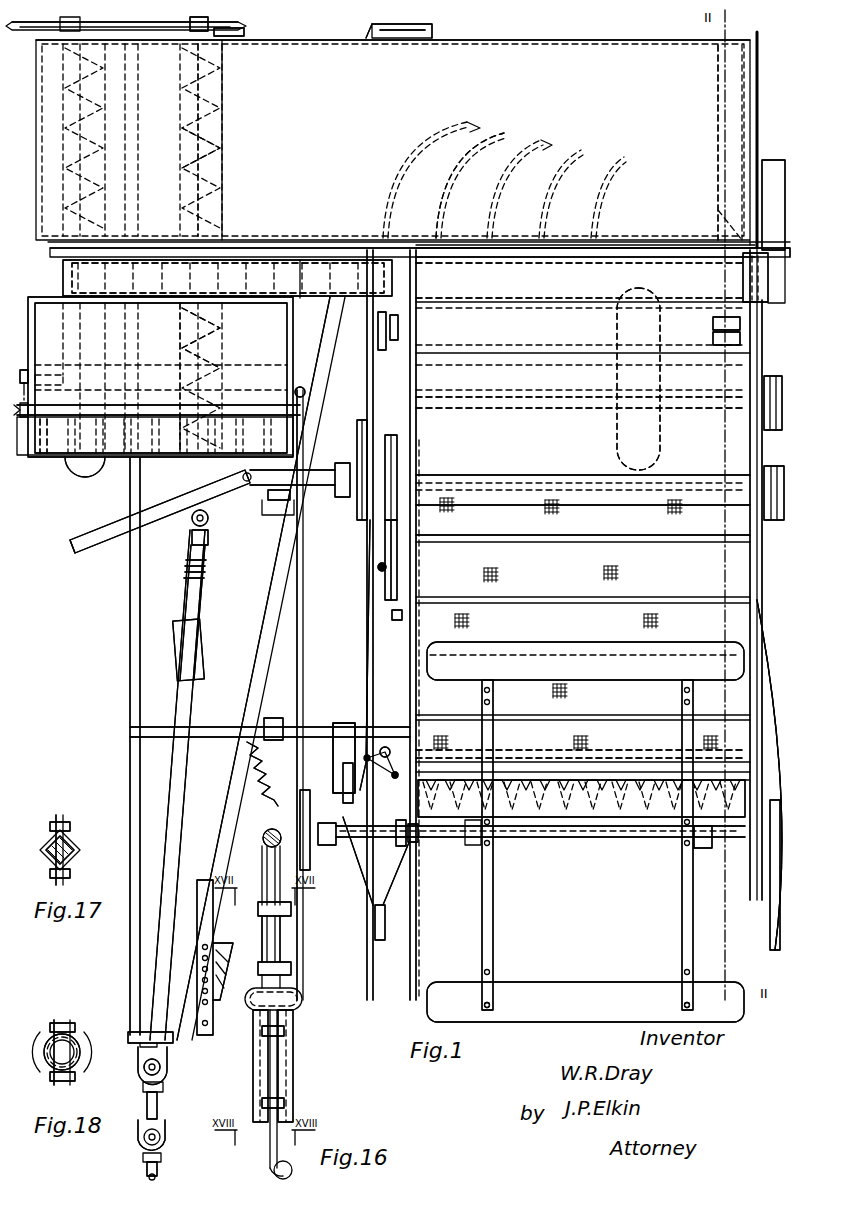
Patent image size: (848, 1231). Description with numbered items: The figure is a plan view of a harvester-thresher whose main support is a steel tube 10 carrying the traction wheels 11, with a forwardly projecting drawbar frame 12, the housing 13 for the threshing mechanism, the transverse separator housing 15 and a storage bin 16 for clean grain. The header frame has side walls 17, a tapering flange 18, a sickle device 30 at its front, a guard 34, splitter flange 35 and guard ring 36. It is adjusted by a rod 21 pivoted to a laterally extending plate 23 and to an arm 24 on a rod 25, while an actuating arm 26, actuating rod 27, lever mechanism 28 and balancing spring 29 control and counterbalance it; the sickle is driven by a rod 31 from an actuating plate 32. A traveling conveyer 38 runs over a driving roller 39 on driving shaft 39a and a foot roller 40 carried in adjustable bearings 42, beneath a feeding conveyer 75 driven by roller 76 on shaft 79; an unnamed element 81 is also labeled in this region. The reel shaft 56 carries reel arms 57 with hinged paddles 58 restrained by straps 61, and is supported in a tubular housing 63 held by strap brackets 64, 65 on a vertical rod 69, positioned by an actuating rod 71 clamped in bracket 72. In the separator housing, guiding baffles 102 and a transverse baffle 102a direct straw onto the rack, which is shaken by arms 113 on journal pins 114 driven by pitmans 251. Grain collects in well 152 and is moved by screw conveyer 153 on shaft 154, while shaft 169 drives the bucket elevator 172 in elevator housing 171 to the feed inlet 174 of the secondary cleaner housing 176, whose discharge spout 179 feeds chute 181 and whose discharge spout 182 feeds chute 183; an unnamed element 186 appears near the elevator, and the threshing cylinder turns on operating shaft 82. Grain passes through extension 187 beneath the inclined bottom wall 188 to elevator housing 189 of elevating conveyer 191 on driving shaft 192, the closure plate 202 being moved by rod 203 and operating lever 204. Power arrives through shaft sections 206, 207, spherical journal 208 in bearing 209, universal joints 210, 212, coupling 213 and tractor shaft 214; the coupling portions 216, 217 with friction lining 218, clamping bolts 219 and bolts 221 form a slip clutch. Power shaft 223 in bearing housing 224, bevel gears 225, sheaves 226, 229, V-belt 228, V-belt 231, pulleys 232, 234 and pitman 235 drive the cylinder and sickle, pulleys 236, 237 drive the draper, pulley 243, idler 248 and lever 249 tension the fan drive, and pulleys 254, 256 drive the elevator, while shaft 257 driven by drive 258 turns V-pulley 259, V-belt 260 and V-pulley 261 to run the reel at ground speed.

In FIG. 1, the steel tube 10 is at (308, 372).
In FIG. 1, the supporting and traction wheels 11 is at (617, 320).
In FIG. 1, the drawbar frame 12 is at (138, 555).
In FIG. 1, the housing for the threshing mechanism 13 is at (752, 358).
In FIG. 1, the separator housing 15 is at (540, 46).
In FIG. 1, the storage bin 16 is at (50, 300).
In FIG. 1, the side walls 17 is at (417, 580).
In FIG. 1, the flange 18 is at (766, 740).
In FIG. 1, the rod 21 is at (346, 800).
In FIG. 1, the laterally extending plate 23 is at (353, 724).
In FIG. 1, the arm 24 is at (334, 752).
In FIG. 1, the rod 25 is at (323, 727).
In FIG. 1, the actuating arm 26 is at (338, 724).
In FIG. 1, the actuating rod 27 is at (226, 968).
In FIG. 1, the lever mechanism 28 is at (213, 1003).
In FIG. 1, the balancing spring 29 is at (272, 776).
In FIG. 1, the sickle device 30 is at (581, 798).
In FIG. 1, the actuating rod 31 is at (393, 779).
In FIG. 1, the actuating plate 32 is at (386, 746).
In FIG. 1, the guard 34 is at (384, 895).
In FIG. 1, the splitter flange 35 is at (765, 860).
In FIG. 1, the guard ring 36 is at (378, 939).
In FIG. 1, the traveling conveyer 38 is at (763, 582).
In FIG. 1, the driving roller 39 is at (707, 398).
In FIG. 1, the driving shaft 39a is at (752, 398).
In FIG. 1, the foot roller 40 is at (612, 751).
In FIG. 1, the adjustable bearings 42 is at (403, 728).
In FIG. 1, the reel shaft 56 is at (645, 839).
In FIG. 1, the reel arms 57 is at (482, 920).
In FIG. 1, the paddle 58 is at (540, 648).
In FIG. 1, the straps 61 is at (482, 992).
In FIG. 1, the tubular supporting housing 63 is at (394, 846).
In FIG. 1, the strap bracket 64 is at (416, 843).
In FIG. 1, the strap bracket 65 is at (328, 846).
In FIG. 1, the vertical rod 69 is at (406, 850).
In FIG. 1, the actuating rod 71 is at (396, 655).
In FIG. 1, the U-shaped supporting bracket 72 is at (397, 621).
In FIG. 1, the feeding conveyer 75 is at (575, 474).
In FIG. 1, the driving roller 76 is at (620, 507).
In FIG. 1, the shaft 79 is at (705, 507).
In FIG. 1, the shelf 81 is at (575, 268).
In FIG. 1, the operating shaft 82 is at (385, 332).
In FIG. 1, the guiding baffles 102 is at (468, 130).
In FIG. 1, the transverse baffle 102a is at (718, 115).
In FIG. 1, the shaking arms 113 is at (185, 33).
In FIG. 1, the journal pins 114 is at (228, 33).
In FIG. 1, the well 152 is at (222, 118).
In FIG. 1, the screw conveyer 153 is at (215, 180).
In FIG. 1, the shaft 154 is at (212, 157).
In FIG. 1, the shaft 169 is at (64, 266).
In FIG. 1, the elevator housing 171 is at (335, 298).
In FIG. 1, the bucket elevator 172 is at (292, 260).
In FIG. 1, the feed inlet 174 is at (400, 284).
In FIG. 1, the housing 176 is at (616, 248).
In FIG. 1, the discharge spout 179 is at (766, 251).
In FIG. 1, the chute 181 is at (773, 172).
In FIG. 1, the discharge spout 182 is at (710, 325).
In FIG. 1, the chute 183 is at (712, 341).
In FIG. 1, the bar 186 is at (352, 248).
In FIG. 1, the conveyer housing extension 187 is at (215, 337).
In FIG. 1, the inclined bottom wall 188 is at (275, 333).
In FIG. 1, the elevator housing 189 is at (252, 407).
In FIG. 1, the elevating conveyer 191 is at (114, 470).
In FIG. 1, the driving shaft 192 is at (265, 488).
In FIG. 1, the closure plate 202 is at (178, 350).
In FIG. 1, the rod 203 is at (178, 470).
In FIG. 1, the operating lever 204 is at (92, 540).
In FIG. 1, the forward power shaft section 206 is at (190, 766).
In FIG. 1, the rear power shaft section 207 is at (204, 553).
In FIG. 16, the rear power shaft section 207 is at (272, 829).
In FIG. 17, the rear power shaft section 207 is at (74, 851).
In FIG. 1, the spherical journal portion 208 is at (168, 1052).
In FIG. 1, the spherical bearing 209 is at (174, 1038).
In FIG. 1, the universal joint 210 is at (161, 1068).
In FIG. 1, the universal joint 212 is at (140, 1138).
In FIG. 1, the intermediate shaft coupling 213 is at (158, 1102).
In FIG. 1, the power shaft 214 is at (147, 1168).
In FIG. 1, the forward coupling portion 216 is at (203, 640).
In FIG. 16, the forward coupling portion 216 is at (296, 1058).
In FIG. 18, the forward coupling portion 216 is at (78, 1036).
In FIG. 1, the rear coupling portion 217 is at (200, 590).
In FIG. 16, the rear coupling portion 217 is at (290, 942).
In FIG. 17, the rear coupling portion 217 is at (48, 852).
In FIG. 16, the friction clutch lining 218 is at (253, 1090).
In FIG. 18, the friction clutch lining 218 is at (85, 1050).
In FIG. 16, the clamping bolts 219 is at (293, 1031).
In FIG. 18, the clamping bolts 219 is at (52, 1030).
In FIG. 16, the bolts 221 is at (291, 910).
In FIG. 17, the bolts 221 is at (71, 845).
In FIG. 1, the power shaft 223 is at (348, 461).
In FIG. 1, the bearing housing 224 is at (325, 487).
In FIG. 1, the bevel gears 225 is at (185, 483).
In FIG. 1, the V-groove sheave 226 is at (356, 432).
In FIG. 1, the V-belt 228 is at (370, 390).
In FIG. 1, the V-groove sheave 229 is at (390, 434).
In FIG. 1, the V-belt 231 is at (384, 540).
In FIG. 1, the V-pulley 232 is at (384, 512).
In FIG. 1, the V-pulley 234 is at (378, 562).
In FIG. 1, the pitman 235 is at (365, 632).
In FIG. 1, the V-belt pulley 236 is at (778, 516).
In FIG. 1, the V-belt pulley 237 is at (392, 338).
In FIG. 1, the V-pulley 243 is at (440, 34).
In FIG. 1, the adjustable idler pulley 248 is at (392, 31).
In FIG. 1, the operating lever 249 is at (372, 38).
In FIG. 1, the pitmans 251 is at (178, 30).
In FIG. 1, the V-pulley or sprocket 254 is at (272, 502).
In FIG. 1, the pulley or sprocket 256 is at (210, 516).
In FIG. 1, the shaft 257 is at (92, 410).
In FIG. 1, the drive 258 is at (28, 376).
In FIG. 1, the V-pulley 259 is at (302, 390).
In FIG. 1, the V-belt 260 is at (304, 610).
In FIG. 1, the V-pulley 261 is at (300, 810).